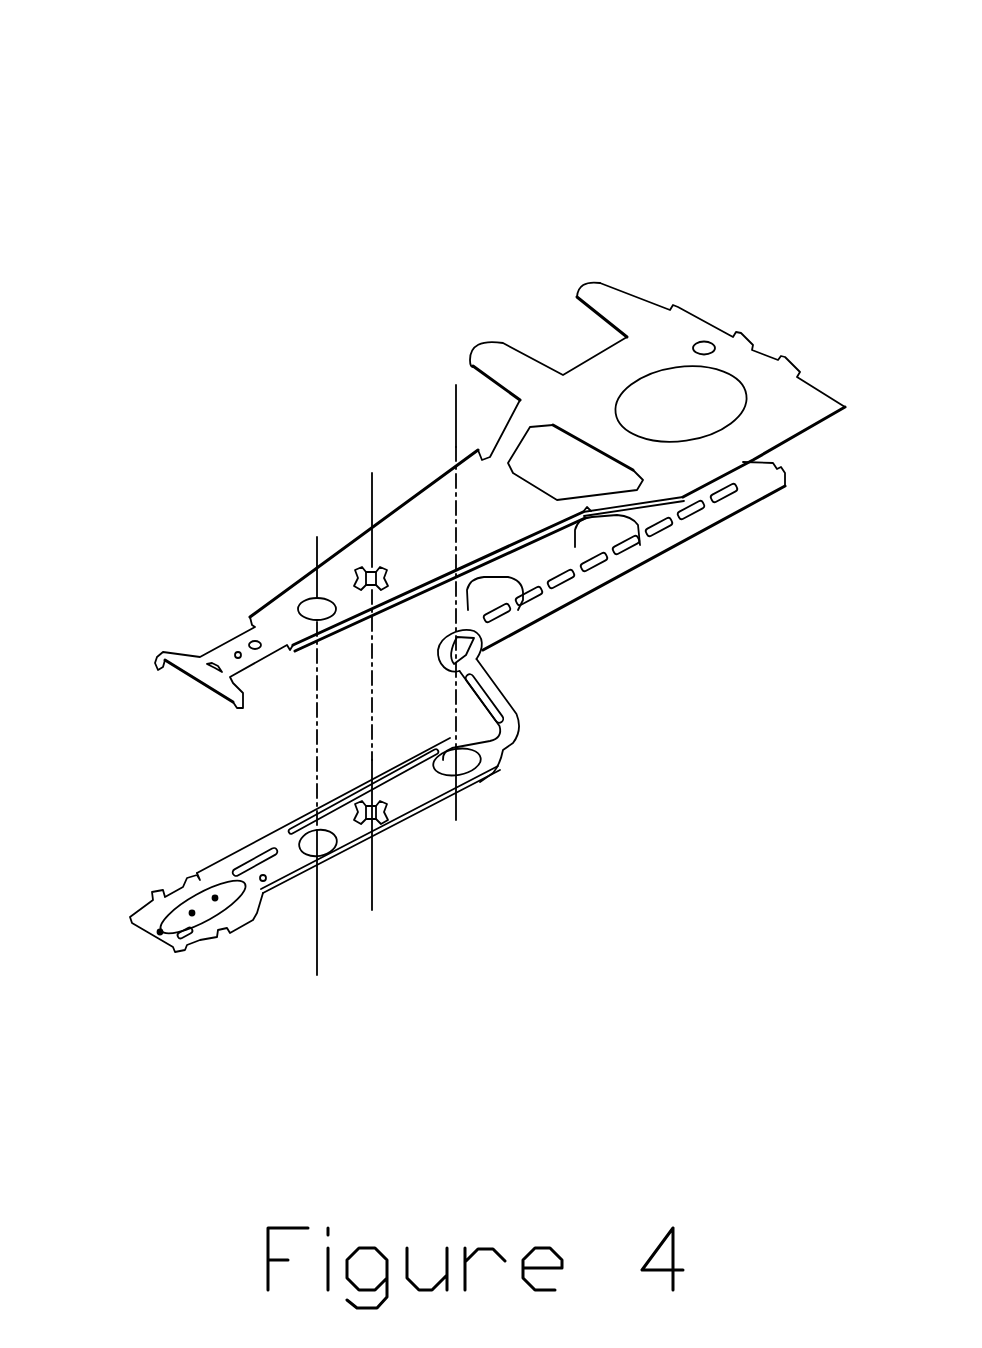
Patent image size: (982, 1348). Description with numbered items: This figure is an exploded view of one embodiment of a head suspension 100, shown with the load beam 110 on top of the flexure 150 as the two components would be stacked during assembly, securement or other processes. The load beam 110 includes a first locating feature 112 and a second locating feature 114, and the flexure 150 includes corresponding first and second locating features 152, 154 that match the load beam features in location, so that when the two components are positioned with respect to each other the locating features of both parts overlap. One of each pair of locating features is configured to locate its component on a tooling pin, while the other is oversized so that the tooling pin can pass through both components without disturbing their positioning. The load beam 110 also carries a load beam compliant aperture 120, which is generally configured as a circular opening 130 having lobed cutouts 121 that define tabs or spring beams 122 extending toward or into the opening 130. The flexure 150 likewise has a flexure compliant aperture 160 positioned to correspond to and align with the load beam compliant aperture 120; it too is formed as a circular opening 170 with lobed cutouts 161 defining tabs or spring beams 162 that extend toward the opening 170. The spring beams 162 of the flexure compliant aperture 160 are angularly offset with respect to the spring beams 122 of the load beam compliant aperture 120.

The head suspension 100 is at (372, 158).
The load beam 110 is at (455, 477).
The first locating feature 112 is at (468, 540).
The second locating feature 114 is at (303, 600).
The load beam compliant aperture 120 is at (361, 572).
The lobed cutouts 121 is at (387, 570).
The spring beams 122 is at (383, 592).
The circular opening 130 is at (357, 590).
The flexure 150 is at (477, 776).
The first locating feature 152 is at (482, 759).
The second locating feature 154 is at (297, 878).
The flexure compliant aperture 160 is at (367, 828).
The lobed cutouts 161 is at (312, 830).
The spring beams 162 is at (387, 782).
The circular opening 170 is at (378, 817).